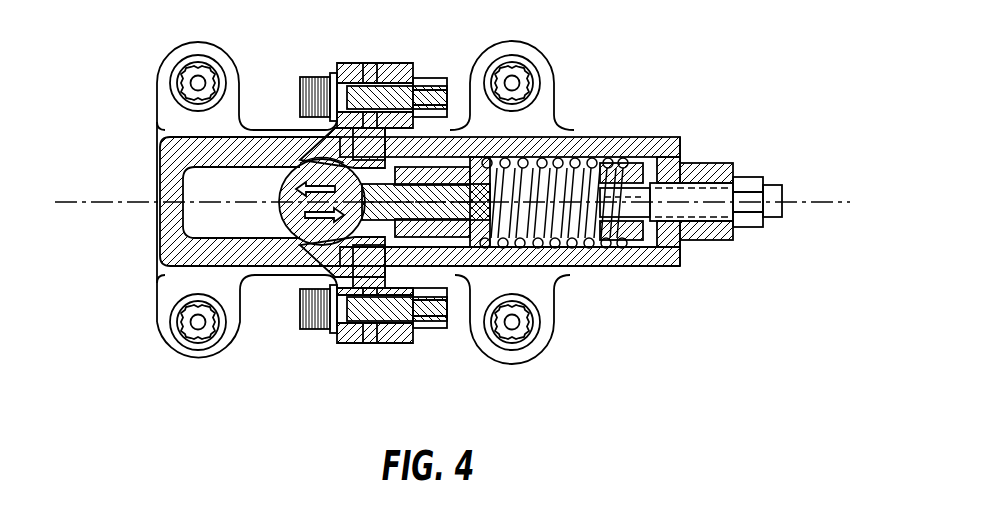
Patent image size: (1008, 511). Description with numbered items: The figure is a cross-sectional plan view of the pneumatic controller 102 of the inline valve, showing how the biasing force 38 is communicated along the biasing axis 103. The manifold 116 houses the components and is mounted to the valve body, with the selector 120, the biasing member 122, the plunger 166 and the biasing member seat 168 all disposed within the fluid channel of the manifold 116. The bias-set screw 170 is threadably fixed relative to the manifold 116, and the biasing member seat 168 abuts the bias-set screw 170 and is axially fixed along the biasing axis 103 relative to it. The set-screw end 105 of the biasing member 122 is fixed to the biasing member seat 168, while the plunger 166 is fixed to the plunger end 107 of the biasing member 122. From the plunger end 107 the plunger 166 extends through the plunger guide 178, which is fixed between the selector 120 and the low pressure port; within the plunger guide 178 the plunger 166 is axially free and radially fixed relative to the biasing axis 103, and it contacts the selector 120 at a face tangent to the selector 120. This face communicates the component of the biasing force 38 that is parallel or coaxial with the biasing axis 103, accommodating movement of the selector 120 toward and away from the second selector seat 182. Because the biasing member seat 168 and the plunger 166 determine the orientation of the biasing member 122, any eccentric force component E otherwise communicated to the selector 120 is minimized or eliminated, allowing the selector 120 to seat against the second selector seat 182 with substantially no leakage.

The pneumatic controller 102 is at (177, 380).
The biasing axis 103 is at (112, 204).
The set-screw end 105 is at (627, 135).
The plunger end 107 is at (515, 262).
The manifold 116 is at (167, 91).
The selector 120 is at (312, 241).
The biasing member 122 is at (571, 227).
The plunger 166 is at (398, 190).
The biasing member seat 168 is at (640, 238).
The bias-set screw 170 is at (697, 210).
The plunger guide 178 is at (423, 235).
The second selector seat 182 is at (296, 191).
The biasing force 38 is at (302, 208).
The eccentric force component E is at (313, 170).